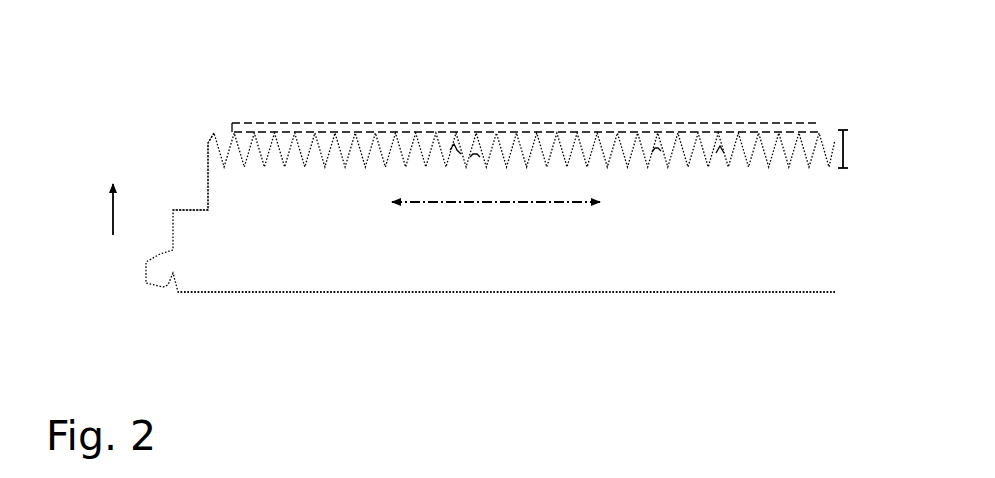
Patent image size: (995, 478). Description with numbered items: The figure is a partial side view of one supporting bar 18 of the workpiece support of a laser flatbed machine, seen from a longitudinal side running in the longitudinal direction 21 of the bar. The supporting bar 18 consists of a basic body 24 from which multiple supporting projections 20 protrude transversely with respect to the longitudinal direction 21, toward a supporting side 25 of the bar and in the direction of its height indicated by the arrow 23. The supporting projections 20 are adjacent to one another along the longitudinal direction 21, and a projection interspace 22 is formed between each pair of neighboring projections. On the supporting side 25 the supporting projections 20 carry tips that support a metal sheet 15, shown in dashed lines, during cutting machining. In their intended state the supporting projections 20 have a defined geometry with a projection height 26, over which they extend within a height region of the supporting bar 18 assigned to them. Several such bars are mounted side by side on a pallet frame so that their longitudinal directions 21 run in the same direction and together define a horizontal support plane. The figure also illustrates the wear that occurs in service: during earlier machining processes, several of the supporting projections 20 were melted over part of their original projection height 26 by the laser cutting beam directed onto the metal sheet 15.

The supporting bar 18 is at (183, 172).
The supporting projection 20 is at (216, 139).
The projection interspace 22 is at (326, 137).
The metal sheet 15 is at (688, 123).
The supporting side 25 is at (486, 69).
The basic body 24 is at (280, 266).
The projection height 26 is at (852, 150).
The longitudinal direction 21 is at (500, 203).
The height of the supporting bar 23 is at (101, 213).